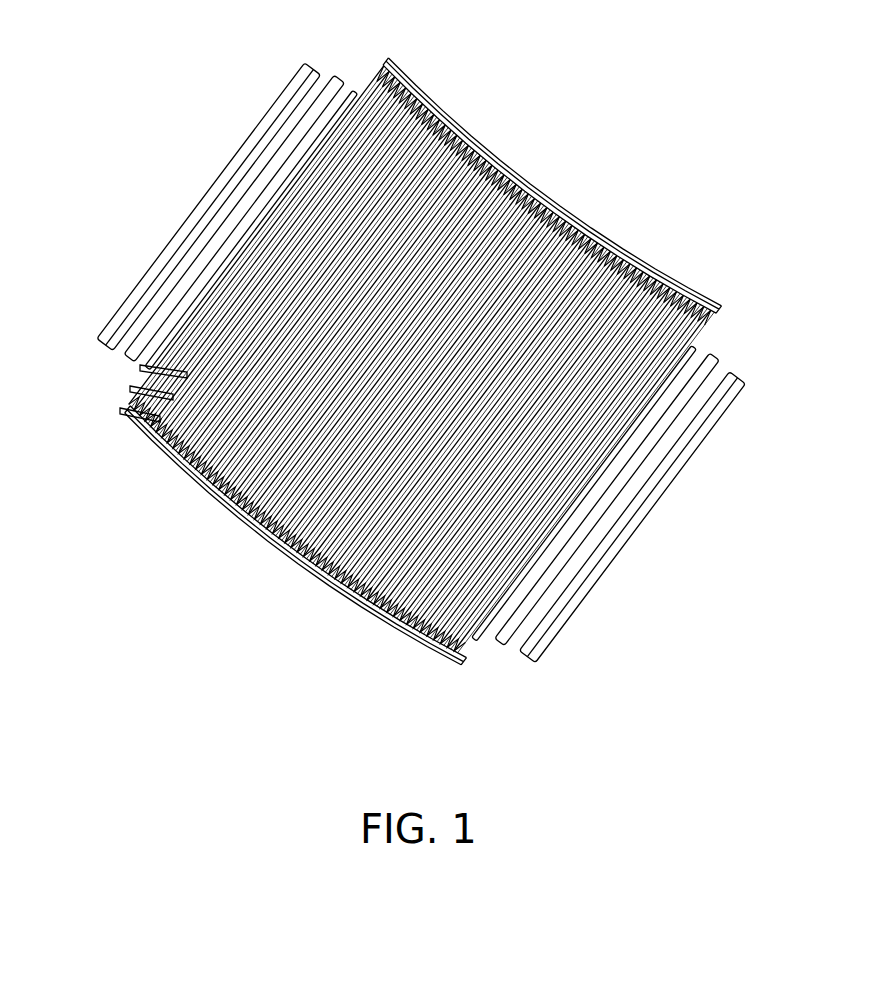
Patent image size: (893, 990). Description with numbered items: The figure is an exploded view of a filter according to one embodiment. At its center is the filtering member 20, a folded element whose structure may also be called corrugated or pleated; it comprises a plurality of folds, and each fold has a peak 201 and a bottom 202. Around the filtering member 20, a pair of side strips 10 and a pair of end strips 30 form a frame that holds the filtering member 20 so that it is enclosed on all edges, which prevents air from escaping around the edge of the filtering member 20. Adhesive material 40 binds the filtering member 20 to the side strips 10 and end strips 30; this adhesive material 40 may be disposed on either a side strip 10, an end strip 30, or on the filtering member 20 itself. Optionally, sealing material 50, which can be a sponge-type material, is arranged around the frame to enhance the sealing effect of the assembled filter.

The side strip 10 is at (462, 657).
The filtering member 20 is at (678, 338).
The peak 201 is at (187, 372).
The bottom 202 is at (143, 382).
The end strip 30 is at (338, 82).
The adhesive material 40 is at (353, 97).
The sealing material 50 is at (217, 192).